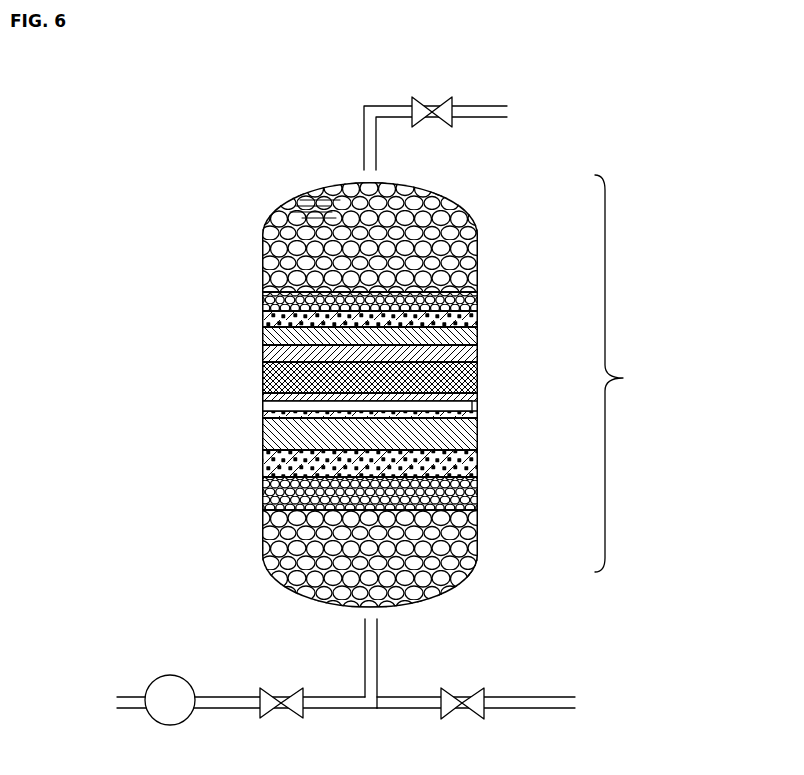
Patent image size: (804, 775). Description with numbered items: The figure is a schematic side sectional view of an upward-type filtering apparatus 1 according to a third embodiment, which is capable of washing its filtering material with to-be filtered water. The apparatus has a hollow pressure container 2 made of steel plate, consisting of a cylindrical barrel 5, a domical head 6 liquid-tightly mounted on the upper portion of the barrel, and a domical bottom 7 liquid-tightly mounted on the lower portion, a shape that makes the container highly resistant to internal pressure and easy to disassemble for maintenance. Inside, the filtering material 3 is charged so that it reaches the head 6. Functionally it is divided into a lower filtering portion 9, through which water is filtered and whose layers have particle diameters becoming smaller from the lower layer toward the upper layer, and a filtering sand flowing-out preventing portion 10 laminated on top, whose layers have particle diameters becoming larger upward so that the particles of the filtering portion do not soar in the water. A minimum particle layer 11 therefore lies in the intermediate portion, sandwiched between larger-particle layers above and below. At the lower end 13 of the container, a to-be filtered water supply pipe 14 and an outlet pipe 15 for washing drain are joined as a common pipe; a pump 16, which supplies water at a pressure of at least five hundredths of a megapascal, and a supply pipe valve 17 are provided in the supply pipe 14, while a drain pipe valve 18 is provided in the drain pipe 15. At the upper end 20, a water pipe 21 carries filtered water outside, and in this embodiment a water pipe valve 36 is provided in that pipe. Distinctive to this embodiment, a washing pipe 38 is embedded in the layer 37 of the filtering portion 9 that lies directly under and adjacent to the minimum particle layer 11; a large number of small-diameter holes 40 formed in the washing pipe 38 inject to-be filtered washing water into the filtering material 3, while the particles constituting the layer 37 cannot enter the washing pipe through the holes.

The upward-type filtering apparatus 1 is at (90, 214).
The pressure container 2 is at (242, 311).
The filtering material 3 is at (619, 373).
The cylindrical barrel 5 is at (262, 358).
The domical head 6 is at (292, 194).
The domical bottom 7 is at (280, 590).
The filtering portion 9 is at (550, 353).
The filtering sand flowing-out preventing portion 10 is at (550, 178).
The minimum particle layer 11 is at (480, 368).
The lower end 13 is at (352, 618).
The to-be filtered water supply pipe 14 is at (225, 697).
The outlet pipe 15 is at (515, 697).
The pump 16 is at (170, 676).
The supply pipe valve 17 is at (272, 690).
The drain pipe valve 18 is at (447, 690).
The upper end 20 is at (352, 172).
The water pipe 21 is at (385, 105).
The water pipe valve 36 is at (422, 98).
The layer 37 is at (480, 393).
The washing pipe 38 is at (174, 401).
The small-diameter holes 40 is at (262, 423).